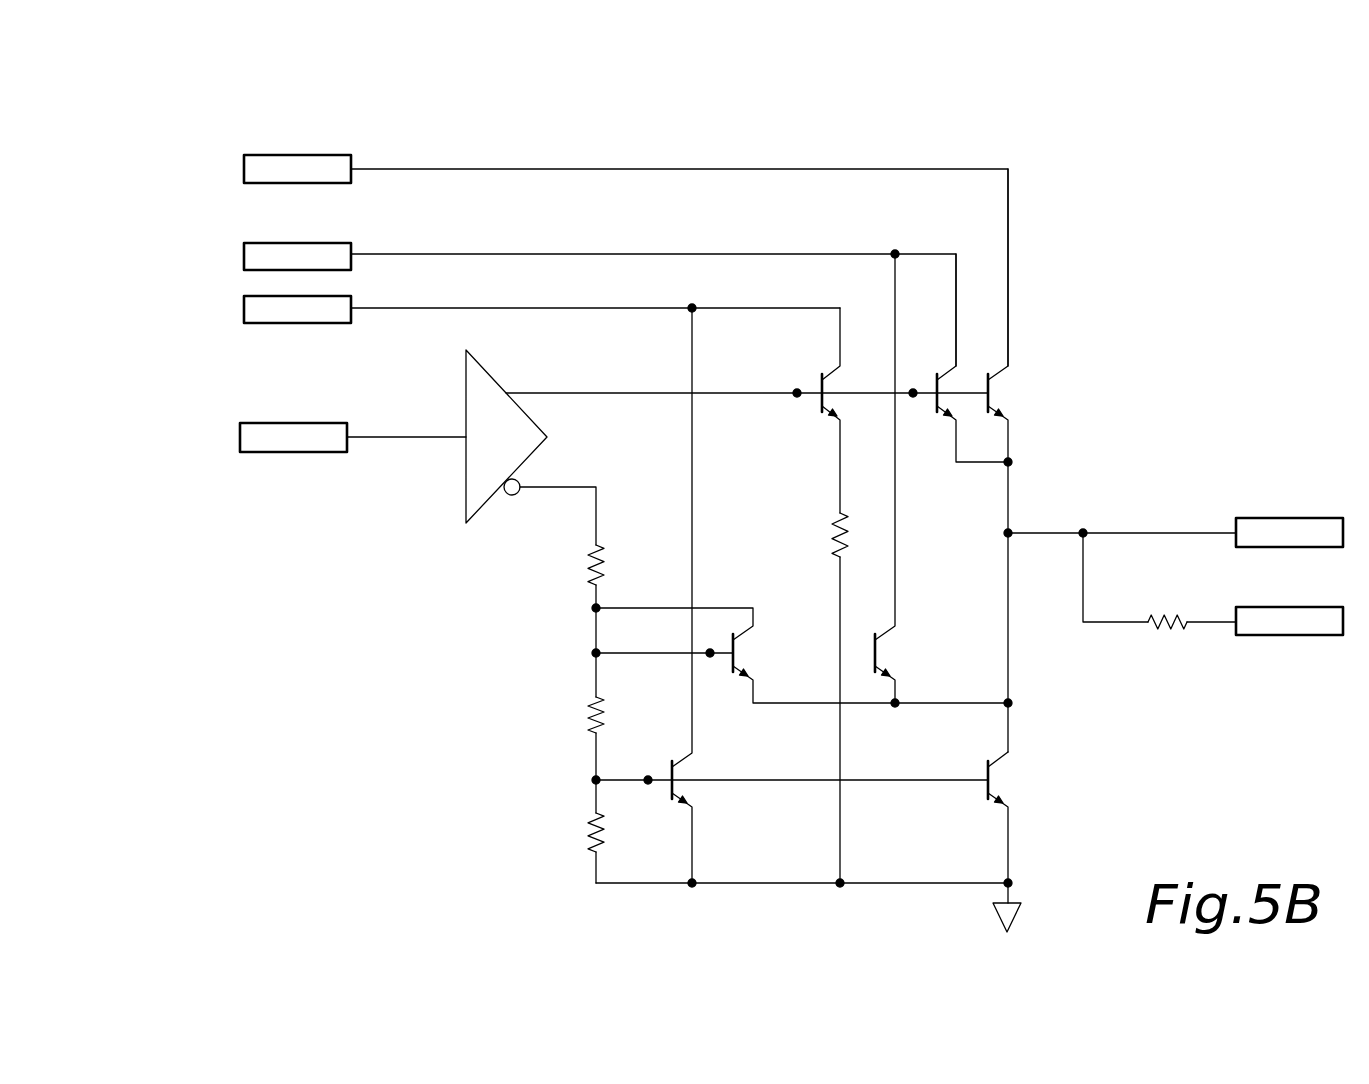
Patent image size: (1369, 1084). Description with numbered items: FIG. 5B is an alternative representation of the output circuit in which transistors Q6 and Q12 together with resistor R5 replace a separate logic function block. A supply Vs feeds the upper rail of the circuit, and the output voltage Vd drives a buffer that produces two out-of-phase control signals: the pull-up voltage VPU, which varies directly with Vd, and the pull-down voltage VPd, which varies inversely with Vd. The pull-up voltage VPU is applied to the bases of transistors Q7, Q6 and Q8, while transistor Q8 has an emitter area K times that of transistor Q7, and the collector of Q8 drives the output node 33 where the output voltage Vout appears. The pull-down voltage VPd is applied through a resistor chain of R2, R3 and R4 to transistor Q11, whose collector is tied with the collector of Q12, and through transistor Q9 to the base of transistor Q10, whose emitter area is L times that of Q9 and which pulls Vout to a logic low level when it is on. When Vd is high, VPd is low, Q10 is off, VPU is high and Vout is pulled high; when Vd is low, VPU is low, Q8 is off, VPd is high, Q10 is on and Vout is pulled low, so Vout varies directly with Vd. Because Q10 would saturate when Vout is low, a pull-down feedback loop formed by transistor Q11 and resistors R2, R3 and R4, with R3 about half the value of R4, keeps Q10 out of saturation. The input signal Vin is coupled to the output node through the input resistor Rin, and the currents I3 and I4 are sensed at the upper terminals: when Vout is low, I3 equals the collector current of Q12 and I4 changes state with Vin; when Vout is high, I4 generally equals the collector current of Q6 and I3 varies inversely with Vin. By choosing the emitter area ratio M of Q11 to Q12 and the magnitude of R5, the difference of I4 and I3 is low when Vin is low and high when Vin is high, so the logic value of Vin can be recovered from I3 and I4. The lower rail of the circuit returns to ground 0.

The supply voltage terminal Vs is at (275, 153).
The current I3 is at (335, 242).
The current I4 is at (305, 323).
The output voltage Vd is at (262, 452).
The pull-up voltage VPU is at (747, 380).
The pull-down voltage VPd is at (558, 500).
The resistor R2 is at (600, 567).
The resistor R3 is at (593, 707).
The resistor R4 is at (590, 846).
The resistor R5 is at (835, 527).
The transistor Q6 is at (937, 380).
The transistor Q7 is at (822, 412).
The transistor Q8 is at (991, 381).
The transistor Q9 is at (670, 793).
The transistor Q10 is at (985, 795).
The transistor Q11 is at (745, 648).
The transistor Q12 is at (887, 645).
The output node 33 is at (1010, 531).
The output voltage VOUT Vout is at (1289, 533).
The input signal Vin is at (1265, 622).
The input resistor Rin is at (1160, 628).
The ground 0 is at (1014, 919).